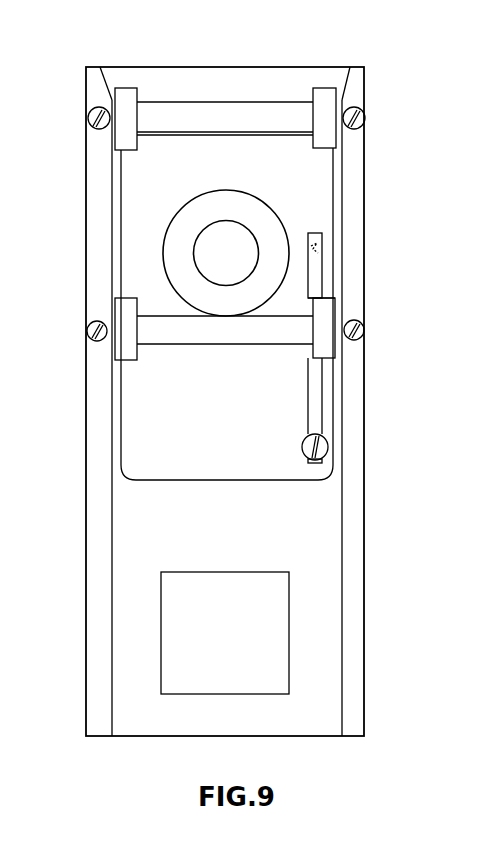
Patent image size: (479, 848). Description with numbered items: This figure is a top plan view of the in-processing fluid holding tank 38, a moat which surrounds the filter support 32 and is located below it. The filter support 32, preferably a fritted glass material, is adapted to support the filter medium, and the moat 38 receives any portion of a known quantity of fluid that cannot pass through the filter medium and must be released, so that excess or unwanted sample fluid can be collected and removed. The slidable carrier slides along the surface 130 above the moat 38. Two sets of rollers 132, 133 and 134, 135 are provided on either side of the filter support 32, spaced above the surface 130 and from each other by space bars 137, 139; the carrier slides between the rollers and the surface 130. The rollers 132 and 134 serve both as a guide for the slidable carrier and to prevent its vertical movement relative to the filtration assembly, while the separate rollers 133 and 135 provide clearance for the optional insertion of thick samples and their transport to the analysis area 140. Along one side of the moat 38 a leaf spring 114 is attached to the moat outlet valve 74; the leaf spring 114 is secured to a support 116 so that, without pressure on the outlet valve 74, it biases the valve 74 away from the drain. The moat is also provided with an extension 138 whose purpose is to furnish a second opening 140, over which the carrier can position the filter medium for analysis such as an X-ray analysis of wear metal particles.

The surface 130 is at (338, 185).
The extension 138 is at (127, 627).
The roller 133 is at (122, 110).
The roller 132 is at (322, 105).
The space bar 137 is at (225, 113).
The roller 135 is at (127, 345).
The roller 134 is at (322, 338).
The leaf spring 114 is at (318, 293).
The space bar 139 is at (168, 332).
The filter support 32 is at (226, 250).
The moat outlet valve 74 is at (312, 247).
The support 116 is at (323, 445).
The in-processing fluid holding tank 38 is at (258, 411).
The opening 140 is at (241, 648).